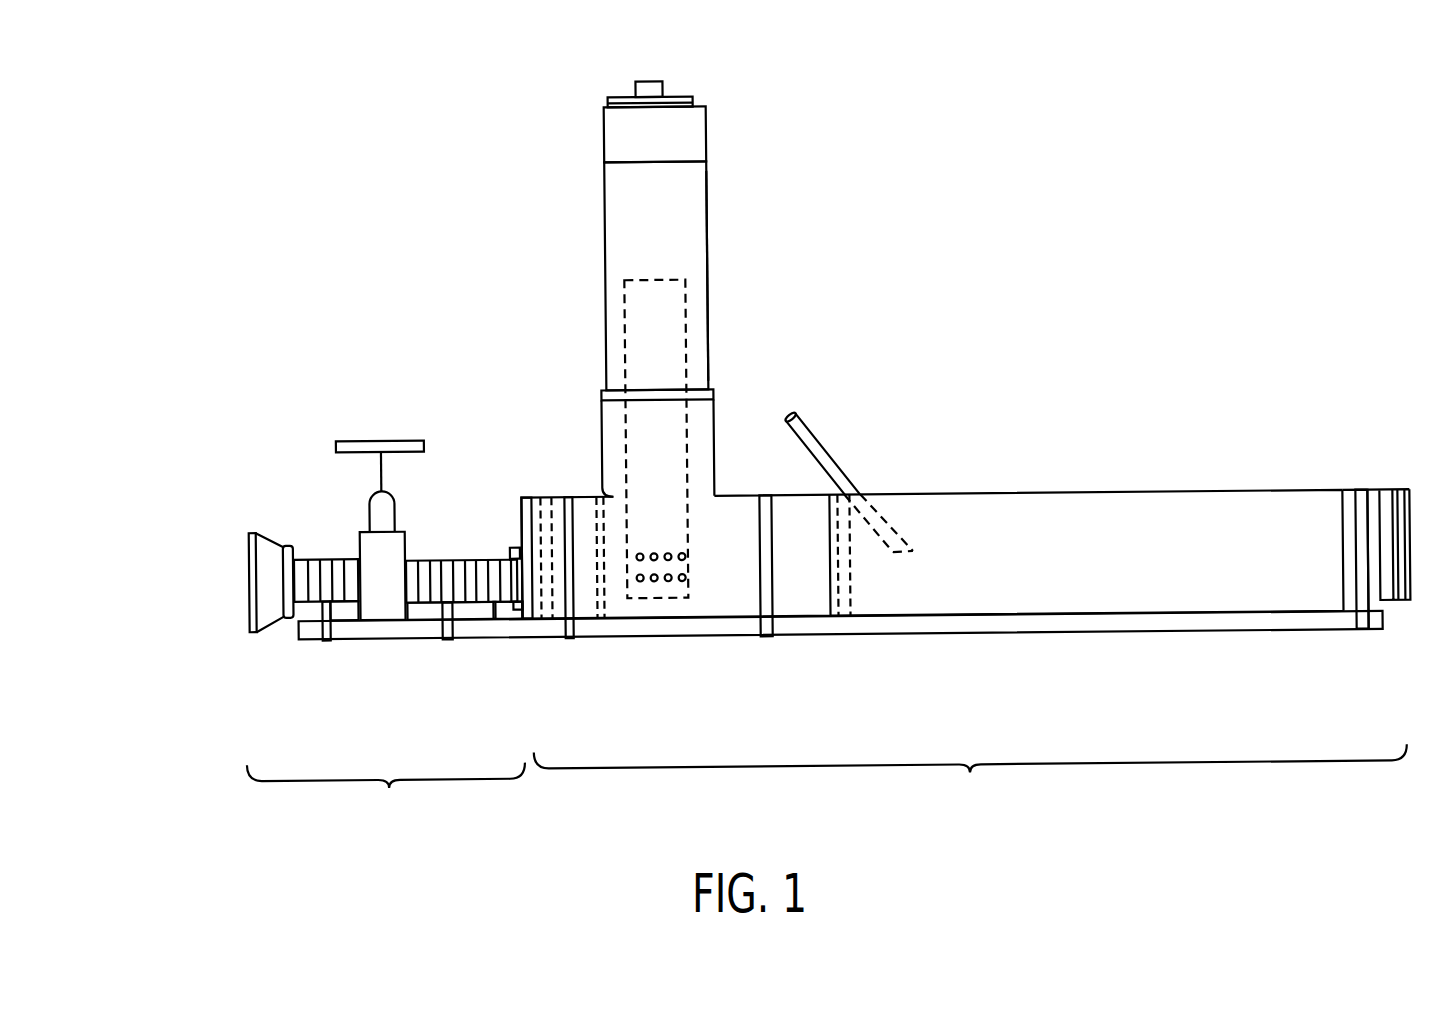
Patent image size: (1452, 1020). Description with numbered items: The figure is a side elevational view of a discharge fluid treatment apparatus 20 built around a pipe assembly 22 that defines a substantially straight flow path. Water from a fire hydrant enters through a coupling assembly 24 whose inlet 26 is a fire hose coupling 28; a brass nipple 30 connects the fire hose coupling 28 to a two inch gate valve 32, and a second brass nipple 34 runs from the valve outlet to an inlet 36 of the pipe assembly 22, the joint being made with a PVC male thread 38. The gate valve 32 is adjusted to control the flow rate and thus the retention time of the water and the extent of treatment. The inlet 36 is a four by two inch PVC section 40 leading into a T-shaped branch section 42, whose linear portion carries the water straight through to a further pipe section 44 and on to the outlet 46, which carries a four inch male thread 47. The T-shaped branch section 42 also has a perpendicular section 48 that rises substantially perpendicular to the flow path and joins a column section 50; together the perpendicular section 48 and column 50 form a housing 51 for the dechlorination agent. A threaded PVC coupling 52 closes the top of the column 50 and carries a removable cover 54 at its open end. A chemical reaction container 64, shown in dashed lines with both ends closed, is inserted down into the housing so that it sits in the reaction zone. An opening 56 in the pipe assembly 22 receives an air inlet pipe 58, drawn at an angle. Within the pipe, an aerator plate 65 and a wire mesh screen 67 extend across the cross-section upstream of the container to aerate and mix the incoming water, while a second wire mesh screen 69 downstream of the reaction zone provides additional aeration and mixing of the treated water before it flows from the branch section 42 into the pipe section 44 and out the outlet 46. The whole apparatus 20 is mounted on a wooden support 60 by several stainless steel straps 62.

The fluid treatment apparatus 20 is at (791, 290).
The pipe assembly 22 is at (970, 782).
The coupling assembly 24 is at (386, 791).
The inlet 26 is at (241, 573).
The fire hose coupling 28 is at (272, 617).
The brass nipple 30 is at (304, 558).
The gate valve 32 is at (397, 511).
The second brass nipple 34 is at (431, 562).
The inlet 36 is at (506, 536).
The male thread 38 is at (517, 609).
The PVC section 40 is at (526, 501).
The T-shaped branch section 42 is at (745, 578).
The pipe section 44 is at (1088, 569).
The outlet 46 is at (1393, 598).
The male thread 47 is at (1397, 488).
The perpendicular section 48 is at (716, 426).
The column section 50 is at (706, 225).
The housing 51 is at (722, 260).
The PVC coupling 52 is at (706, 148).
The removable cover 54 is at (668, 92).
The opening 56 is at (860, 491).
The air inlet pipe 58 is at (801, 420).
The support 60 is at (1112, 637).
The straps 62 is at (325, 641).
The chemical reaction container 64 is at (650, 300).
The aerator plate 65 is at (549, 496).
The wire mesh screen 67 is at (604, 640).
The wire mesh screen 69 is at (858, 640).